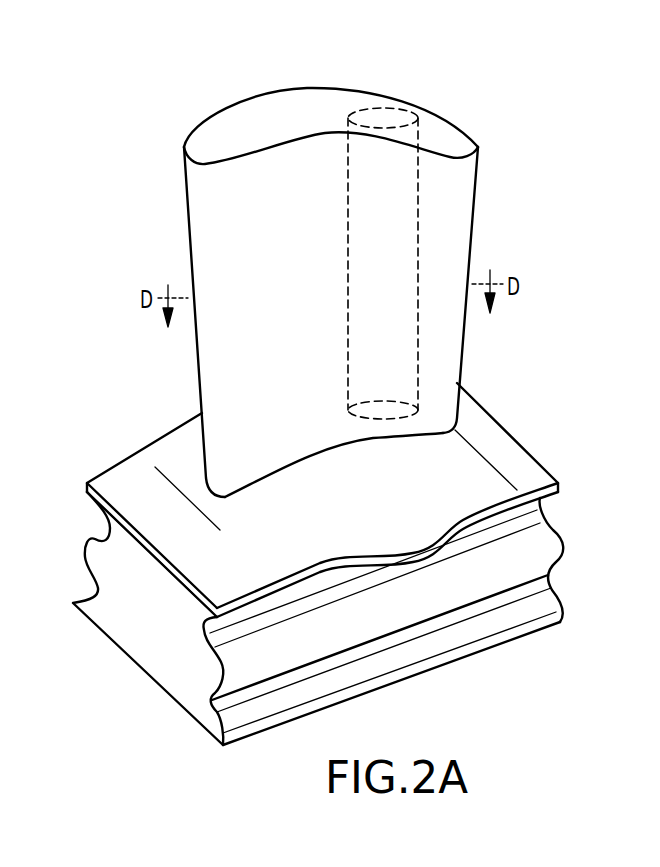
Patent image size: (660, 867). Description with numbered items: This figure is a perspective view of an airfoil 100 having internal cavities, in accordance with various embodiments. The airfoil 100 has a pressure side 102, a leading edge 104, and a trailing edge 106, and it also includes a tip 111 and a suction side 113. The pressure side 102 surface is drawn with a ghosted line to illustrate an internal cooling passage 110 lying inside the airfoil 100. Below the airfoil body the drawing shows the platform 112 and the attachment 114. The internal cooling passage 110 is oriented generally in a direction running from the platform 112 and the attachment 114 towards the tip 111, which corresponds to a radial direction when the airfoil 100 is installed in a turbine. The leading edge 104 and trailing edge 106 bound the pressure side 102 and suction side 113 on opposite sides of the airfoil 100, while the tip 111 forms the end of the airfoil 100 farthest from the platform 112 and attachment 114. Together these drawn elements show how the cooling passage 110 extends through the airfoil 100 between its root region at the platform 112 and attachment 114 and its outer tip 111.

The airfoil 100 is at (545, 106).
The pressure side 102 is at (223, 223).
The leading edge 104 is at (193, 277).
The trailing edge 106 is at (468, 257).
The internal cooling passage 110 is at (410, 157).
The tip 111 is at (265, 110).
The platform 112 is at (520, 461).
The suction side 113 is at (317, 88).
The attachment 114 is at (542, 597).